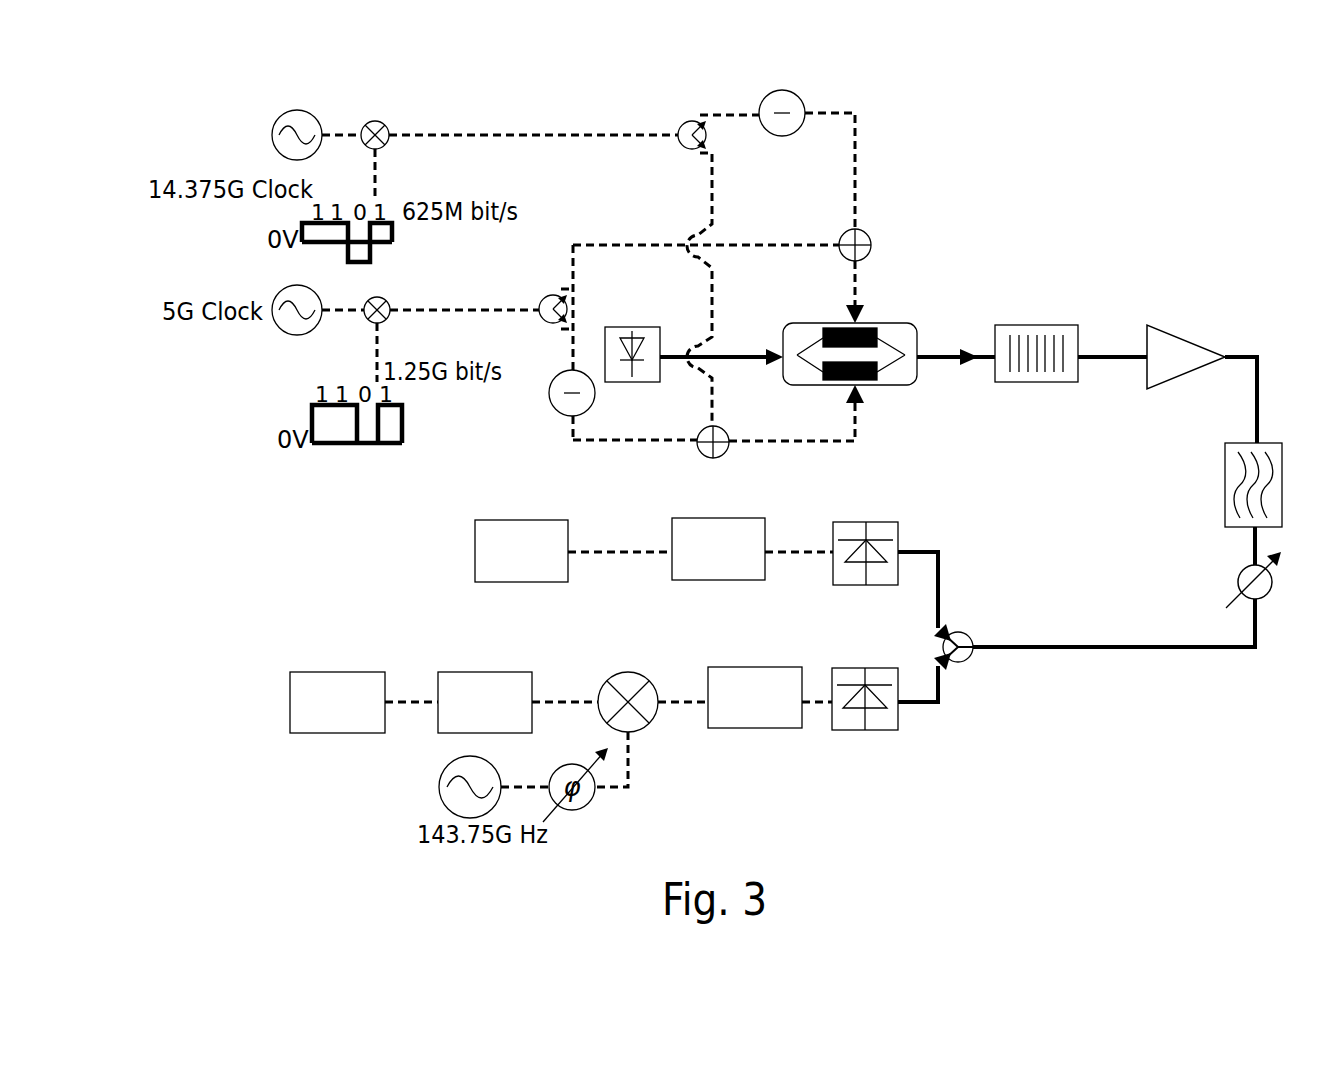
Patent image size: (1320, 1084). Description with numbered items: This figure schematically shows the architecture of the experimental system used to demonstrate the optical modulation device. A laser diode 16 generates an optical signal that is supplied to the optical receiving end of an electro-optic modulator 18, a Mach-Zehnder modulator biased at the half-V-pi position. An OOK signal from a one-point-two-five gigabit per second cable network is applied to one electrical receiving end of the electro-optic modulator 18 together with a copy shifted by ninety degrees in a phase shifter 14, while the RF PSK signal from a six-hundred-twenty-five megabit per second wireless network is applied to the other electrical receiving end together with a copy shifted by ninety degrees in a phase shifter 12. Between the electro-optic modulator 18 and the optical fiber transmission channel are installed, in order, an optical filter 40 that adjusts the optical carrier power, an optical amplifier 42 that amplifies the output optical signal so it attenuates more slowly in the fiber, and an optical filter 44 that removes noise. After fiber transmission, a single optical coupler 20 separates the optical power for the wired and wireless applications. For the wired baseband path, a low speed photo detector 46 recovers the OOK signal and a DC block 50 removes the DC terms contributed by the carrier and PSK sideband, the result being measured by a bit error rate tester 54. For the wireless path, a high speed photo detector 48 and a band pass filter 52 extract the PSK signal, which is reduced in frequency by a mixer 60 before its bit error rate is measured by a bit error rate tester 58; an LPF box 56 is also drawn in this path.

The phase shifter 12 is at (785, 90).
The phase shifter 14 is at (557, 410).
The laser diode 16 is at (633, 383).
The electro-optic modulator 18 is at (900, 386).
The optical coupler 20 is at (967, 662).
The optical filter 40 is at (1043, 325).
The optical amplifier 42 is at (1172, 332).
The optical filter 44 is at (1225, 473).
The photo detector 46 is at (878, 587).
The photo detector 48 is at (893, 733).
The DC block 50 is at (710, 582).
The band pass filter 52 is at (783, 730).
The bit error rate tester 54 is at (522, 583).
The low pass filter 56 is at (455, 668).
The bit error rate tester 58 is at (342, 672).
The mixer 60 is at (439, 787).